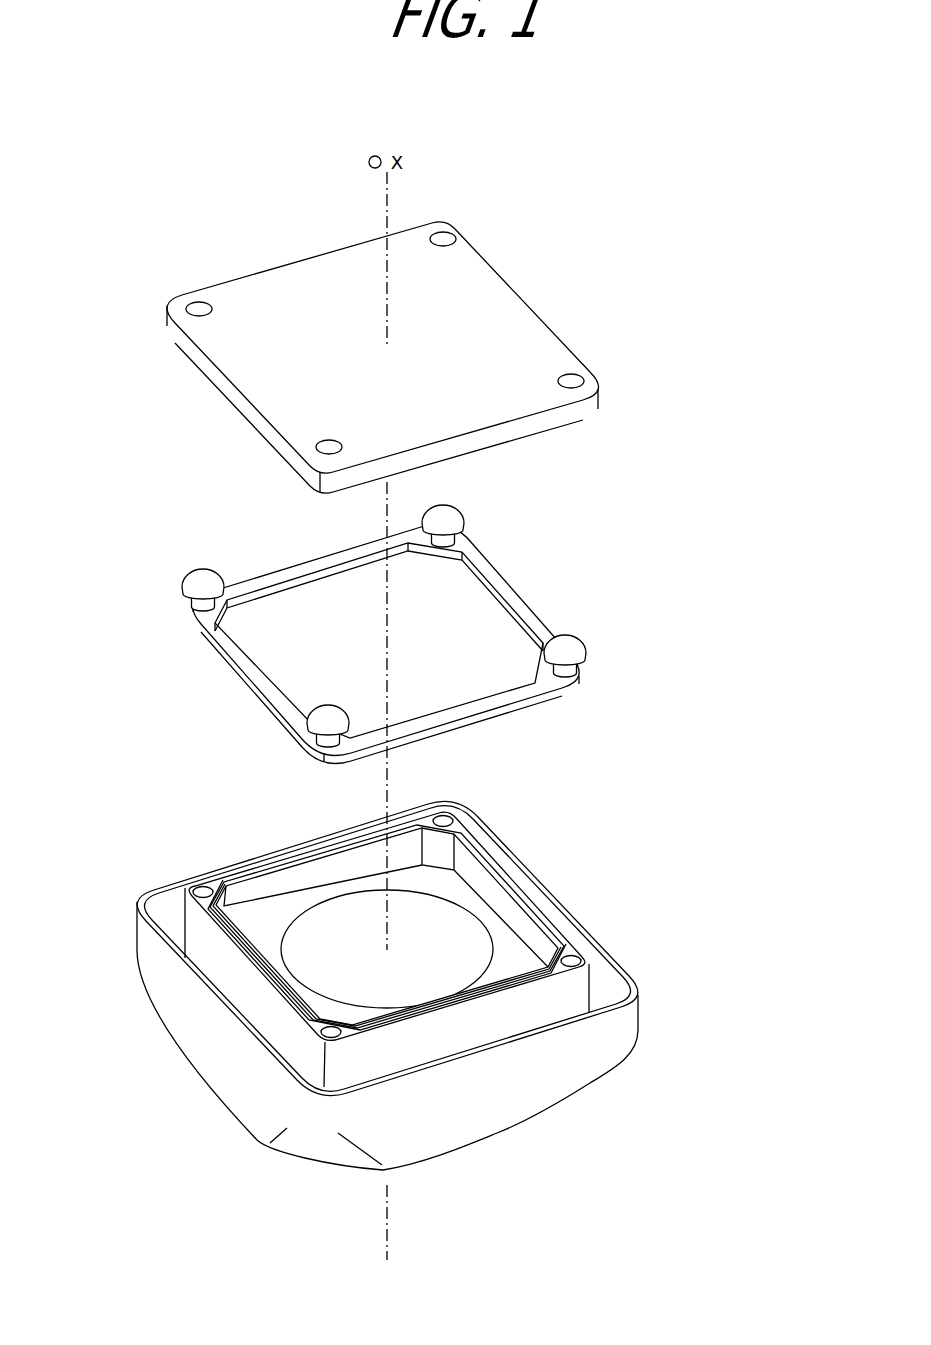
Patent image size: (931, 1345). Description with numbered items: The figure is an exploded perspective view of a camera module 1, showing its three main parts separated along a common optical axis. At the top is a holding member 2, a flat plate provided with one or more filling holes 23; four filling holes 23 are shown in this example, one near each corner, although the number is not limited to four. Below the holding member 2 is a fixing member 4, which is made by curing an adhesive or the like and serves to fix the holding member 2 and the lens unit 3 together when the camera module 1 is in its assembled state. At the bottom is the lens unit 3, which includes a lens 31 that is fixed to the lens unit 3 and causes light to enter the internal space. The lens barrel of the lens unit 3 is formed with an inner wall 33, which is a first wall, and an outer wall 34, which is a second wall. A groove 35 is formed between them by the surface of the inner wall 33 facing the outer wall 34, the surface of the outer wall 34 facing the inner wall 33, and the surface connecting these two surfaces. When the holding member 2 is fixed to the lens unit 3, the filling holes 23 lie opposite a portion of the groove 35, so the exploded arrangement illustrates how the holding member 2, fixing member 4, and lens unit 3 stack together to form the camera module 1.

The camera module 1 is at (76, 535).
The holding member 2 is at (383, 342).
The filling holes 23 is at (443, 240).
The fixing member 4 is at (231, 668).
The lens unit 3 is at (364, 1004).
The lens 31 is at (460, 930).
The inner wall 33 is at (223, 937).
The outer wall 34 is at (267, 987).
The groove 35 is at (242, 962).